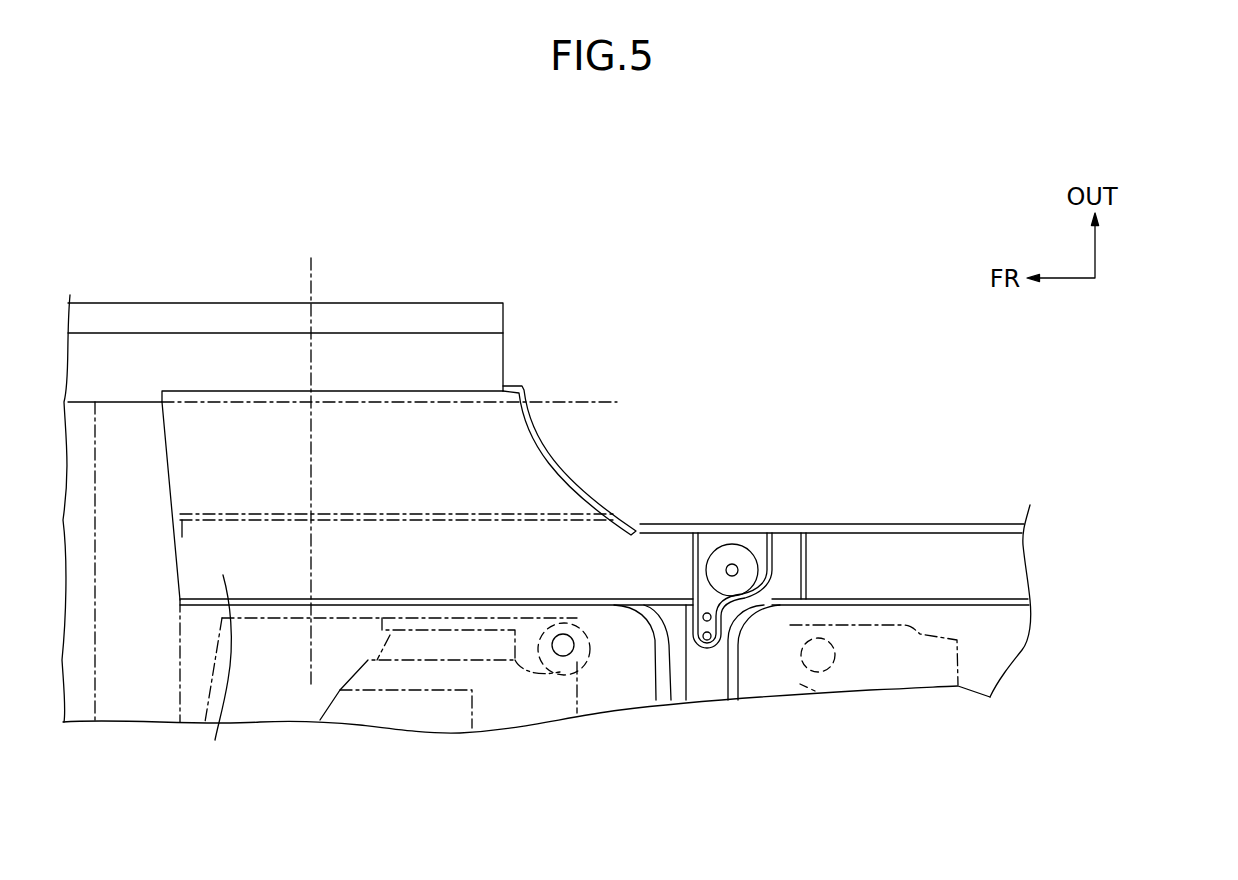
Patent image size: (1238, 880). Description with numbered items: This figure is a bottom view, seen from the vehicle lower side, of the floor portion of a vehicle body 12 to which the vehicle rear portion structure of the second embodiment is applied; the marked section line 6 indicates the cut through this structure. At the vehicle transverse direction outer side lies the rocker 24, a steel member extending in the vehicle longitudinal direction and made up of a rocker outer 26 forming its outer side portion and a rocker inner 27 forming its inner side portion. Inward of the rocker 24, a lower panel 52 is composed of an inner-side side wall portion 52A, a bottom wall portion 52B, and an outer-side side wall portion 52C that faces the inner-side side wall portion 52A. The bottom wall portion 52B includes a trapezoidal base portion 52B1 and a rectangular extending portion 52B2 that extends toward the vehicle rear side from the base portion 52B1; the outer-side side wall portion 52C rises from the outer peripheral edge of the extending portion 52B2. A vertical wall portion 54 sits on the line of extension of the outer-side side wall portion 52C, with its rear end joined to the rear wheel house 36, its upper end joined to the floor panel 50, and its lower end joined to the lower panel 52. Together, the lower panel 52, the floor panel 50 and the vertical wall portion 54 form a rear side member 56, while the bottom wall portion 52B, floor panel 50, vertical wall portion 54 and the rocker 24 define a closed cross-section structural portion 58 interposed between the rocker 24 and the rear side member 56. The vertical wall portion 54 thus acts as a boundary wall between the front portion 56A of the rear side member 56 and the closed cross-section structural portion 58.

The section line 6- 6 is at (300, 265).
The vehicle body 12 is at (717, 313).
The rocker 24 is at (344, 292).
The rocker outer 26 is at (360, 303).
The rocker inner 27 is at (478, 362).
The rear wheel house 36 is at (525, 390).
The floor panel 50 is at (175, 732).
The lower panel 52 is at (620, 562).
The inner-side side wall portion 52A is at (973, 602).
The bottom wall portion 52B is at (193, 557).
The base portion 52B1 is at (192, 463).
The extending portion 52B2 is at (965, 553).
The outer-side side wall portion 52C is at (917, 525).
The vertical wall portion 54 is at (445, 520).
The rear side member 56 is at (1118, 542).
The front portion 56A is at (219, 743).
The closed cross-section structural portion 58 is at (620, 423).